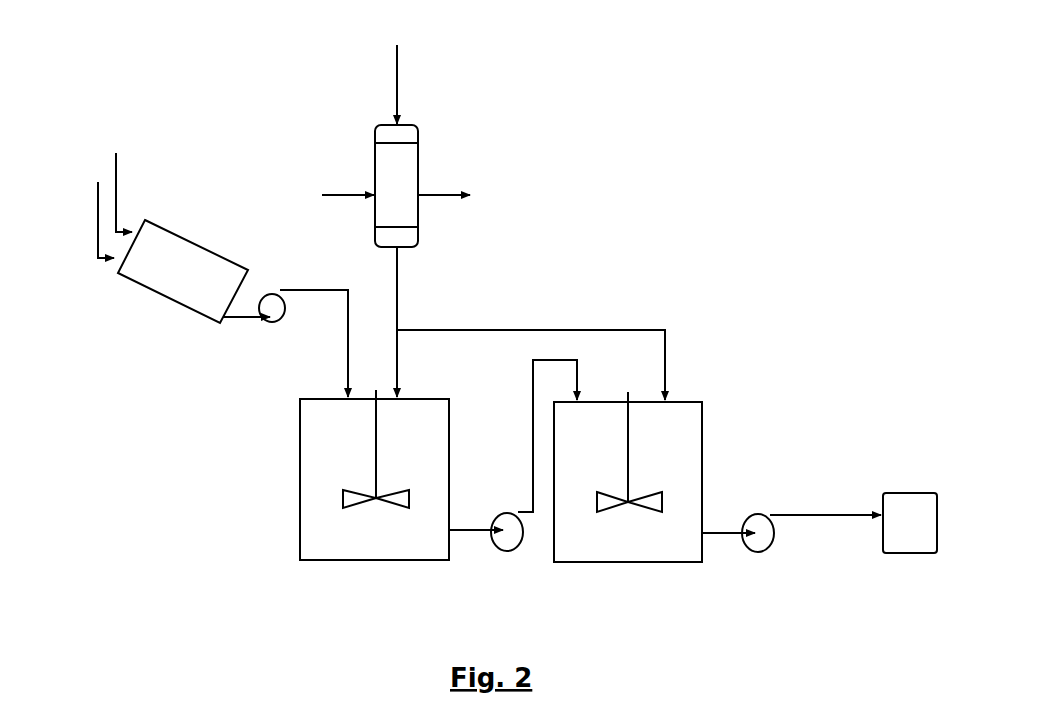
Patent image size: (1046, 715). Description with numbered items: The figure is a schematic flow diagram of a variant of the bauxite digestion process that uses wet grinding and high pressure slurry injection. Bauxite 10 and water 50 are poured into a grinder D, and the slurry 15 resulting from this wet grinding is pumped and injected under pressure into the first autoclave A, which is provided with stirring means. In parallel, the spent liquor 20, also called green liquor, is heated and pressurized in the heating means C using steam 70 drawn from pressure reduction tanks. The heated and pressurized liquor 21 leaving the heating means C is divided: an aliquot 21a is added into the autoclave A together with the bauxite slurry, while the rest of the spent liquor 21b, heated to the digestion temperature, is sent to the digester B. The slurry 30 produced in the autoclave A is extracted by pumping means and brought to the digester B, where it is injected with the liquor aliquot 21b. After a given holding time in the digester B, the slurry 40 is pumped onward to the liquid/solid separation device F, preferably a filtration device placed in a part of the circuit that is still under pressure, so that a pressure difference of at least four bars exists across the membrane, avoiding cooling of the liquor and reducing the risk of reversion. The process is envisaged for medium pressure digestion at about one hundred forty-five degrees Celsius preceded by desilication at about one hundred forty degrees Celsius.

The bauxite 10 is at (138, 185).
The water 50 is at (87, 203).
The grinder D is at (187, 277).
The slurry 15 is at (285, 343).
The spent liquor 20 is at (425, 67).
The steam 70 is at (386, 175).
The heating means C is at (407, 168).
The heated spent liquor stream 21 is at (419, 288).
The aliquot of spent liquor 21a is at (428, 362).
The rest of the spent liquor 21b is at (562, 349).
The first autoclave A is at (372, 533).
The slurry 30 is at (513, 455).
The digester B is at (625, 537).
The slurry 40 is at (791, 517).
The liquid/solid separation device F is at (910, 523).